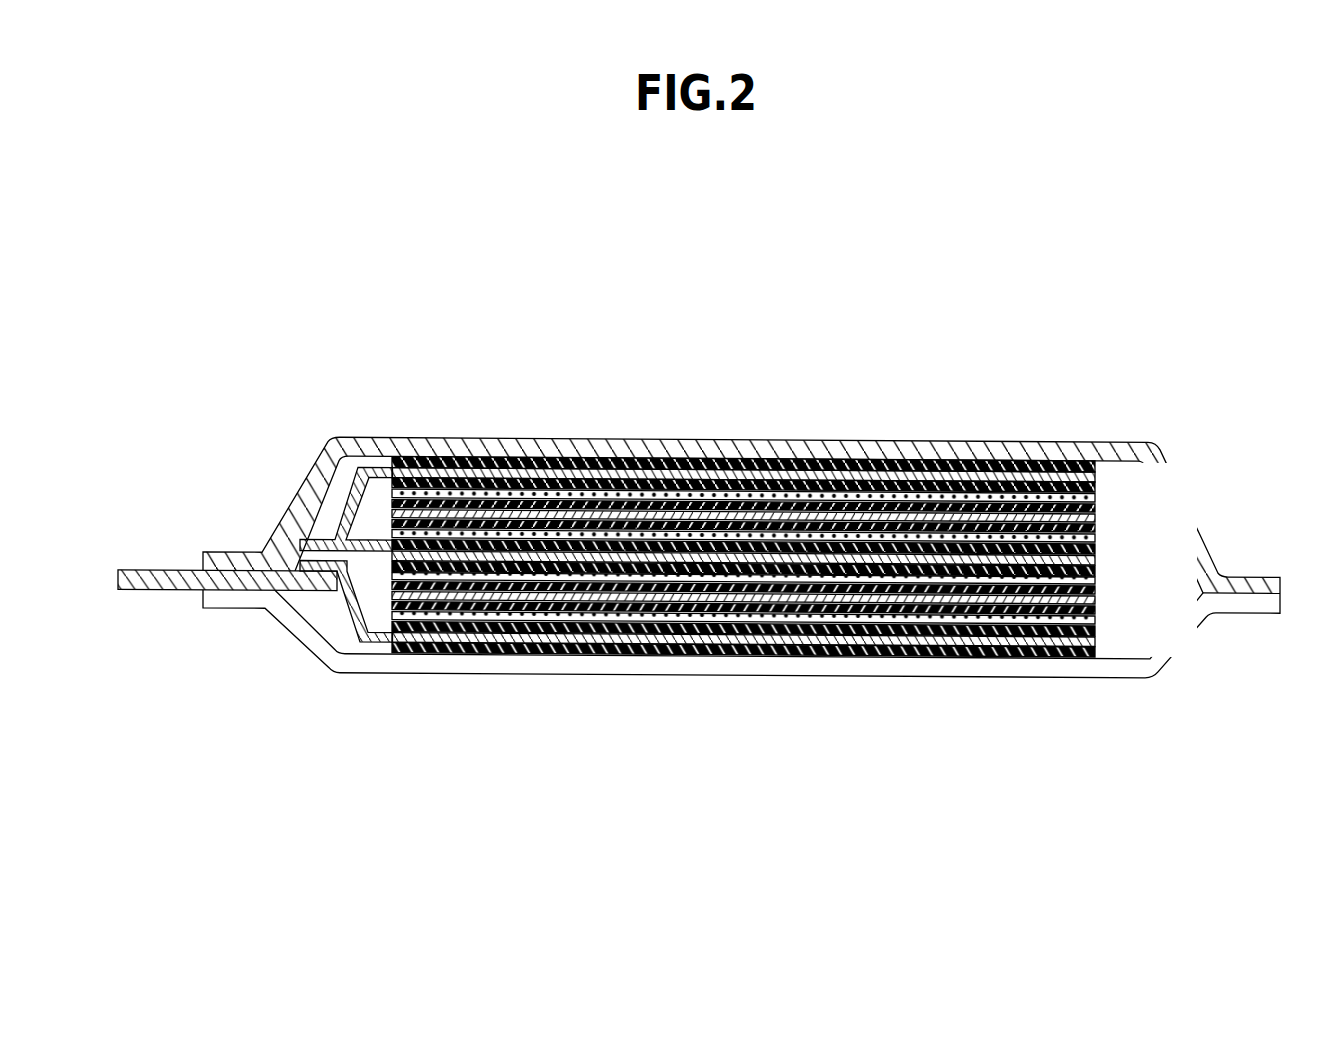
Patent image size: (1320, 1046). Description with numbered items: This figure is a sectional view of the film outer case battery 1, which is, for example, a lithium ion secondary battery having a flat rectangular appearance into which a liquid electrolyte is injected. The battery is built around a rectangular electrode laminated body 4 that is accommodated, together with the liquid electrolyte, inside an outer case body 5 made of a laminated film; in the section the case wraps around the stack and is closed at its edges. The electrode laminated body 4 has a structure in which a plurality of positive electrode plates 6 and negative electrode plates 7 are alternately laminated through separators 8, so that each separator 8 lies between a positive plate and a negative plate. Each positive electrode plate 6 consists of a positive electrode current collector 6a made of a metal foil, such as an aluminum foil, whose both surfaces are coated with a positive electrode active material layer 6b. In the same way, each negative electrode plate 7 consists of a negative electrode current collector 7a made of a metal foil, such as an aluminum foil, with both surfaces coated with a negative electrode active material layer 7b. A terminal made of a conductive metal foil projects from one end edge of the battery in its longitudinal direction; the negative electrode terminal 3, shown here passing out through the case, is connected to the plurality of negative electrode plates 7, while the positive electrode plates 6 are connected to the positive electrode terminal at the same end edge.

The film outer case battery 1 is at (700, 366).
The negative electrode terminal 3 is at (140, 583).
The electrode laminated body 4 is at (1109, 529).
The outer case body 5 is at (895, 453).
The positive electrode plate 6 is at (211, 445).
The positive electrode current collector 6a is at (390, 509).
The positive electrode active material layer 6b is at (390, 494).
The negative electrode plate 7 is at (1127, 348).
The negative electrode current collector 7a is at (1017, 478).
The negative electrode active material layer 7b is at (970, 463).
The separator 8 is at (779, 495).